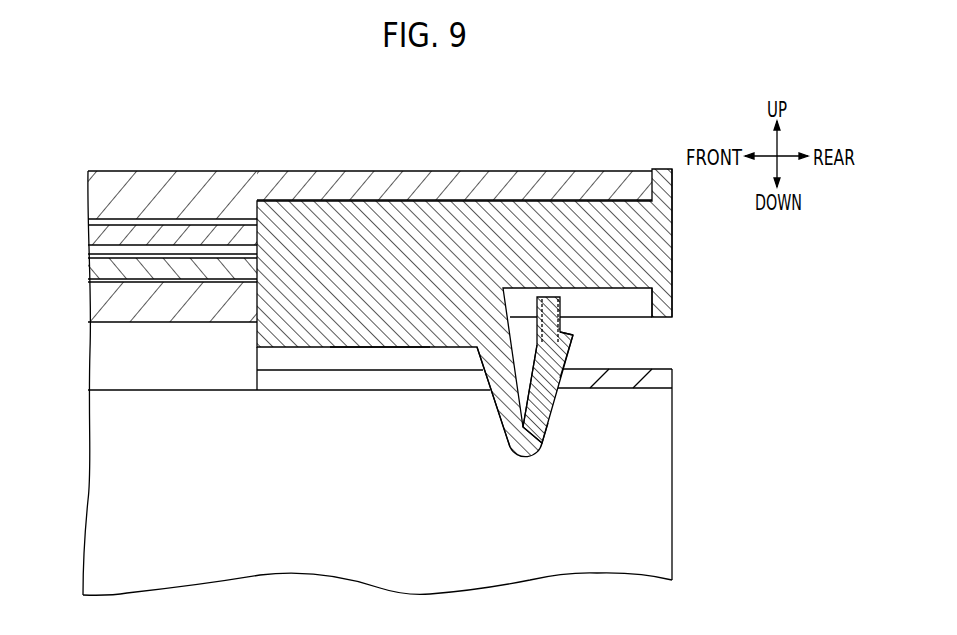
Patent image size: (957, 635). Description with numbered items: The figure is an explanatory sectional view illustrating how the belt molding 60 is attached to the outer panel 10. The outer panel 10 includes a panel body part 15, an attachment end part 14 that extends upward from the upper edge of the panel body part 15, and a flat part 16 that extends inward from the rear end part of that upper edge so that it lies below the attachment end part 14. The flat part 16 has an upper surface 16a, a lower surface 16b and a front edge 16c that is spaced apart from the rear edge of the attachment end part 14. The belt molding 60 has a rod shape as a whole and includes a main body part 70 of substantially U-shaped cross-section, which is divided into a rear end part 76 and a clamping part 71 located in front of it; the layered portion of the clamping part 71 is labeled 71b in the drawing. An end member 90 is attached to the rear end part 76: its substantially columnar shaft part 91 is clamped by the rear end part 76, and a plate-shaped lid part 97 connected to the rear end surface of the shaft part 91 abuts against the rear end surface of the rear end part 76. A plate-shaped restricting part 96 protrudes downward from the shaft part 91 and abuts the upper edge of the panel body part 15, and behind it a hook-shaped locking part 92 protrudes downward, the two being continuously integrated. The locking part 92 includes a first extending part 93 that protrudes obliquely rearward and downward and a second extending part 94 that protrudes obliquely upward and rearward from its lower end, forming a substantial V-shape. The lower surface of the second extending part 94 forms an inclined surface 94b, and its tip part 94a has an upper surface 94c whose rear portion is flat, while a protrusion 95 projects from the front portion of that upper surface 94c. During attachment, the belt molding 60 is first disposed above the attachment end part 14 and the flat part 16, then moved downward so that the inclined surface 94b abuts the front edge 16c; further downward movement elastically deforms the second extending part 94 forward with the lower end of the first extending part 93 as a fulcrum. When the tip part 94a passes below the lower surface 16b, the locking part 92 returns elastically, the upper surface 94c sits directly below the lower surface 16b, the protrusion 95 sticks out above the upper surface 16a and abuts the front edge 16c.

The outer panel 10 is at (672, 433).
The attachment end part 14 is at (97, 347).
The panel body part 15 is at (343, 390).
The flat part 16 is at (655, 368).
The upper surface of the flat part 16a is at (640, 367).
The lower surface of the flat part 16b is at (628, 388).
The front edge of the flat part 16c is at (548, 415).
The belt molding 60 is at (595, 142).
The main body part 70 is at (452, 171).
The clamping part 71 is at (148, 171).
The thin portion 71b is at (165, 226).
The rear end part 76 is at (313, 171).
The end member 90 is at (657, 168).
The shaft part 91 is at (520, 200).
The locking part 92 is at (283, 348).
The first extending part 93 is at (492, 405).
The second extending part 94 is at (548, 432).
The tip part 94a is at (553, 398).
The inclined surface 94b is at (573, 346).
The upper surface 94c is at (568, 332).
The protrusion 95 is at (553, 297).
The restricting part 96 is at (378, 348).
The lid part 97 is at (673, 188).